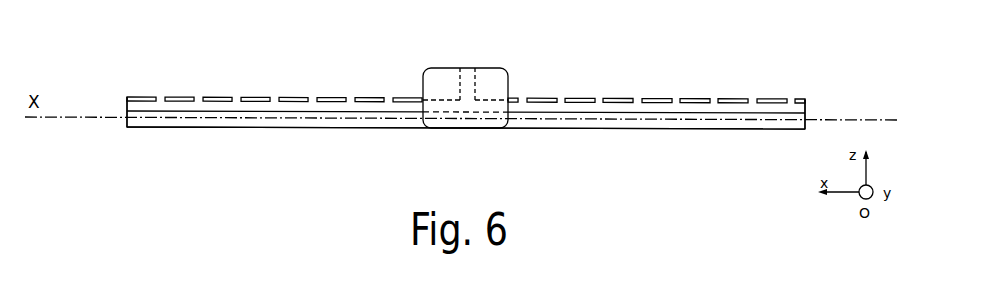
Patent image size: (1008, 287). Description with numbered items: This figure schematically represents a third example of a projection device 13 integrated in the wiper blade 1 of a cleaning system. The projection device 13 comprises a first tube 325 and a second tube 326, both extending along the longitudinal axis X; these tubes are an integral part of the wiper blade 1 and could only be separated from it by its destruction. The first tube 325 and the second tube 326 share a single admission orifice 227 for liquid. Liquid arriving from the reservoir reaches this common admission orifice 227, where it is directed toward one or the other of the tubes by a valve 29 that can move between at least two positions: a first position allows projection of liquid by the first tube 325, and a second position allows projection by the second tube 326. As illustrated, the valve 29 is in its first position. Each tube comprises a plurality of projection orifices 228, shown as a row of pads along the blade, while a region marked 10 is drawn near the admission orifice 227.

The wiper blade 1 is at (662, 138).
The pixel unit 10 is at (498, 70).
The projection device 13 is at (378, 117).
The valve 29 is at (470, 103).
The admission orifice 227 is at (468, 72).
The projection orifices 228 is at (157, 97).
The first tube 325 is at (135, 107).
The second tube 326 is at (803, 110).